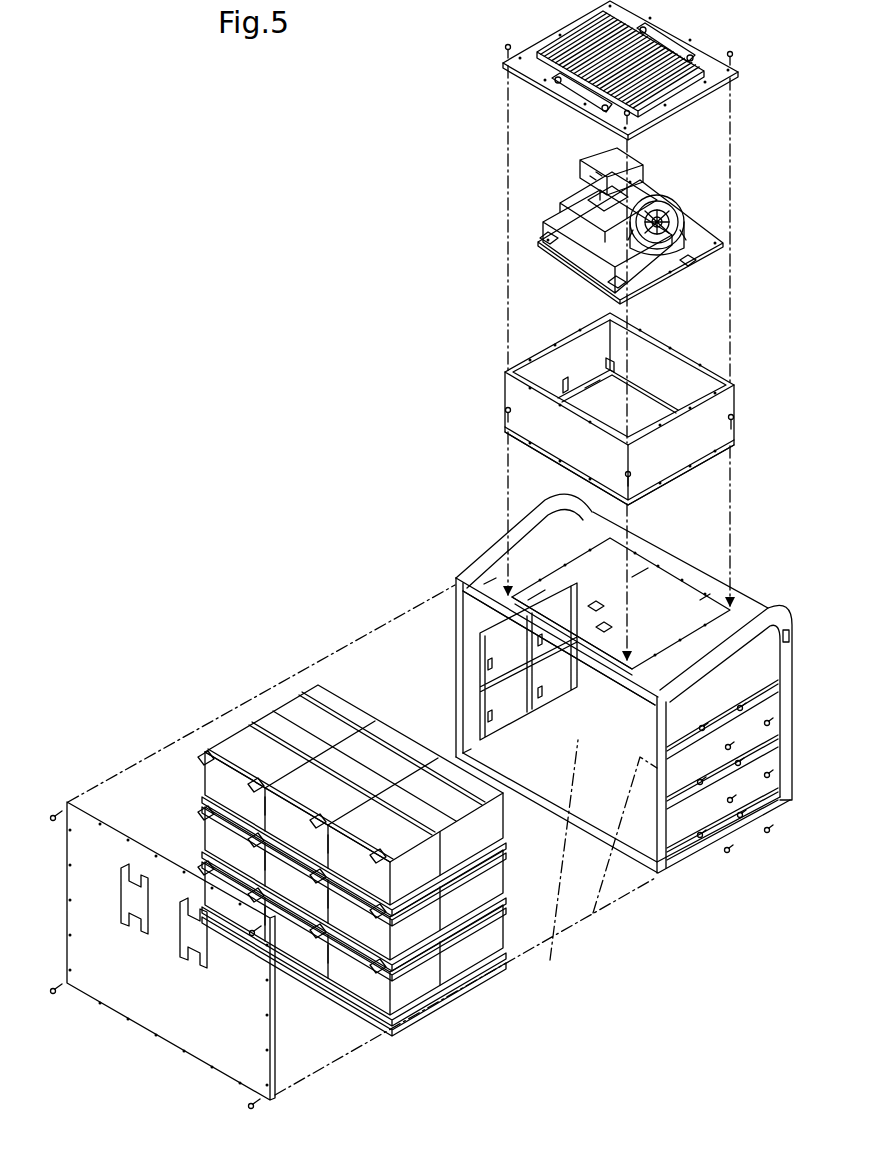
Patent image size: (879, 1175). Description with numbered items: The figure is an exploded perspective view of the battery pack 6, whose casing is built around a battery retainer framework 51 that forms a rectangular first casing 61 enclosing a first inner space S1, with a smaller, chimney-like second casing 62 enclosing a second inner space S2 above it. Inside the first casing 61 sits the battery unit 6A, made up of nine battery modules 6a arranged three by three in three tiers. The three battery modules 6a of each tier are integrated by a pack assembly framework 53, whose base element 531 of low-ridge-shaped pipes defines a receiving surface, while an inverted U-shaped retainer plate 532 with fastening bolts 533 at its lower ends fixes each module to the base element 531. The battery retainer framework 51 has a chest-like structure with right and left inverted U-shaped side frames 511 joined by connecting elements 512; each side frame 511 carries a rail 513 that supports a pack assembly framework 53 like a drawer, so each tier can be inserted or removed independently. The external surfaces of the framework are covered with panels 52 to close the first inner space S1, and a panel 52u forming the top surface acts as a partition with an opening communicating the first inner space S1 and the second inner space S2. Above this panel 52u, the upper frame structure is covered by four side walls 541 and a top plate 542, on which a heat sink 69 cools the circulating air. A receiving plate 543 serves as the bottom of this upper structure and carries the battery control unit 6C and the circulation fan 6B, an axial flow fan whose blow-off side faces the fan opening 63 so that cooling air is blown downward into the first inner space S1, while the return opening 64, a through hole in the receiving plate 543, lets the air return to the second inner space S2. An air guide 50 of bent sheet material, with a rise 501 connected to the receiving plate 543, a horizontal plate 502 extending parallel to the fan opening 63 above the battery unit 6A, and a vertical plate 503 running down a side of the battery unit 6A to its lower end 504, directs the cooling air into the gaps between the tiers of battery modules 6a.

The battery pack 6 is at (185, 152).
The battery unit 6A is at (268, 705).
The circulation fan 6B is at (657, 208).
The battery control unit 6C is at (608, 158).
The battery module 6a is at (240, 735).
The air guide 50 is at (660, 595).
The rise 501 is at (540, 595).
The horizontal plate 502 is at (640, 573).
The vertical plate 503 is at (652, 642).
The lower end 504 is at (607, 627).
The battery retainer framework 51 is at (703, 850).
The side frame 511 is at (458, 585).
The connecting element 512 is at (712, 783).
The rail 513 is at (480, 688).
The panel 52 is at (628, 830).
The panel 52u is at (493, 580).
The pack assembly framework 53 is at (235, 752).
The base element 531 is at (243, 825).
The retainer plate 532 is at (335, 697).
The fastening bolt 533 is at (503, 823).
The side wall 541 is at (528, 430).
The top plate 542 is at (530, 53).
The receiving plate 543 is at (695, 240).
The first casing 61 is at (360, 508).
The second casing 62 is at (500, 375).
The fan opening 63 is at (693, 608).
The return opening 64 is at (490, 580).
The heat sink 69 is at (688, 88).
The first inner space S1 is at (488, 718).
The second inner space S2 is at (590, 362).